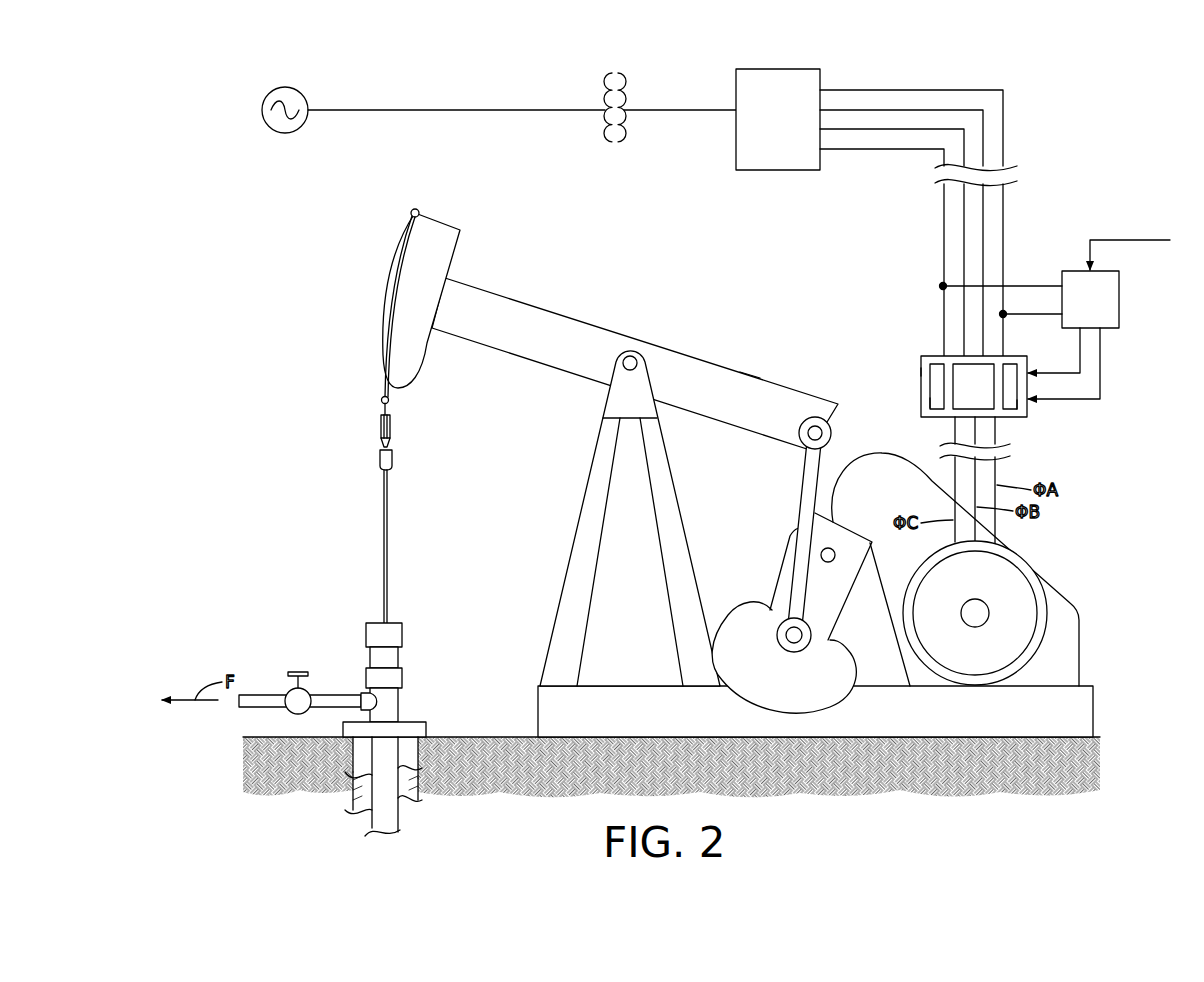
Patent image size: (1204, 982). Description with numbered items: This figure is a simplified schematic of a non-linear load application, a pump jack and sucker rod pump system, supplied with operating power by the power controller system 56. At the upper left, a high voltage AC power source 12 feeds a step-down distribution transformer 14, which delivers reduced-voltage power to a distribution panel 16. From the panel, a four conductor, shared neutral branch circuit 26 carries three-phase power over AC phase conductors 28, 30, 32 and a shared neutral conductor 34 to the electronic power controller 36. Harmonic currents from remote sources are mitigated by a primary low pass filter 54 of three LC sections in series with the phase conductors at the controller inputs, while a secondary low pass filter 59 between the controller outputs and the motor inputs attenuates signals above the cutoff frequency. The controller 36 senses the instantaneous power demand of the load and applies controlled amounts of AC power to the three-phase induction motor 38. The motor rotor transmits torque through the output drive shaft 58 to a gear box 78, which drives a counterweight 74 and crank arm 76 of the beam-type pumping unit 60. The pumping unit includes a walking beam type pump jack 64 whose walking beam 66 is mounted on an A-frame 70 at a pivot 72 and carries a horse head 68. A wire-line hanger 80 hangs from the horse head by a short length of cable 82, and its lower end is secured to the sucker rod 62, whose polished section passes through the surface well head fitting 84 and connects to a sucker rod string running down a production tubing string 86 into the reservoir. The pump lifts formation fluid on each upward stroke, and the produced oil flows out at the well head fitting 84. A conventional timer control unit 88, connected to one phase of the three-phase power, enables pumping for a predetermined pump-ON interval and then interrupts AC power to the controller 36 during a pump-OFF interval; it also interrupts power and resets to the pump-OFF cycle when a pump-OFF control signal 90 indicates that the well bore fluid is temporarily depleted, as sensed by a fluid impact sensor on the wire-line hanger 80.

The high voltage AC power source 12 is at (258, 103).
The step-down distribution transformer 14 is at (603, 92).
The distribution panel 16 is at (767, 130).
The branch circuit 26 is at (1025, 216).
The AC phase conductor 28 is at (893, 90).
The AC phase conductor 30 is at (920, 108).
The AC phase conductor 32 is at (940, 128).
The shared neutral conductor 34 is at (943, 222).
The electronic power controller 36 is at (962, 395).
The three-phase induction motor 38 is at (1050, 631).
The primary low pass filter 54 is at (930, 403).
The power controller system 56 is at (919, 372).
The output drive shaft 58 is at (975, 628).
The secondary low pass filter 59 is at (1020, 410).
The beam-type pumping unit 60 is at (751, 340).
The sucker rod 62 is at (383, 525).
The walking beam type pump jack 64 is at (350, 295).
The walking beam 66 is at (510, 302).
The horse head 68 is at (440, 240).
The A-frame 70 is at (585, 518).
The pivot 72 is at (622, 370).
The counterweight 74 is at (833, 692).
The crank arm 76 is at (804, 495).
The gear box 78 is at (867, 499).
The wire-line hanger 80 is at (380, 428).
The cable 82 is at (380, 386).
The wellhead 84 is at (400, 633).
The production tubing string 86 is at (372, 820).
The timer control unit 88 is at (1079, 309).
The pump-OFF control signal 90 is at (1140, 240).